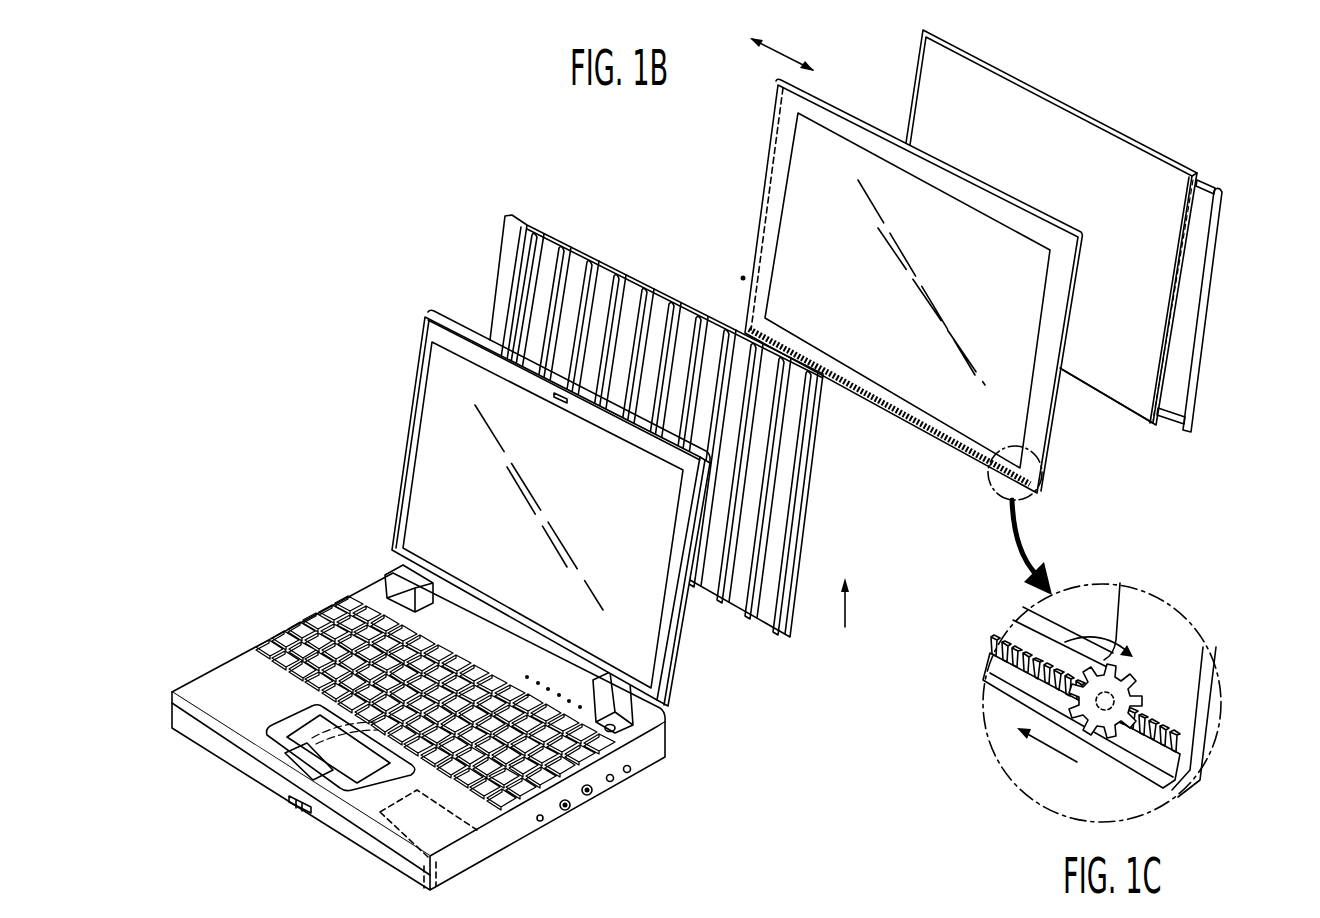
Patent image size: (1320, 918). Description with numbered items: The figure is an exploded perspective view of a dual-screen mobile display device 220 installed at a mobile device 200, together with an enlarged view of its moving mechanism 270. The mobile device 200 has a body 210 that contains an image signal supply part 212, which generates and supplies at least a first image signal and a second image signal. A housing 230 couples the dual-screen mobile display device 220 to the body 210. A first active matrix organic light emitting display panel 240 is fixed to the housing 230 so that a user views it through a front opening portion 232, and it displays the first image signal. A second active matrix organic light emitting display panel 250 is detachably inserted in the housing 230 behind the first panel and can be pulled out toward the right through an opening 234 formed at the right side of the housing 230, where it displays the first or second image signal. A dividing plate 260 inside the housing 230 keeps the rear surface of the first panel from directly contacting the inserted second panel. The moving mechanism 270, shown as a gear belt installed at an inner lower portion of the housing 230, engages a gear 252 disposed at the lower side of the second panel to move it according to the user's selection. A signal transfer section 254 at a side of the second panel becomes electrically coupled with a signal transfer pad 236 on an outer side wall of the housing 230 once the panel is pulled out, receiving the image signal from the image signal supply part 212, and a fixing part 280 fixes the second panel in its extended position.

In FIG. 1B, the mobile device 200 is at (264, 434).
In FIG. 1B, the body 210 is at (278, 616).
In FIG. 1B, the image signal supply part 212 is at (388, 827).
In FIG. 1B, the dual-screen mobile display device 220 is at (460, 130).
In FIG. 1B, the housing 230 is at (428, 316).
In FIG. 1B, the front opening portion 232 is at (418, 522).
In FIG. 1B, the opening 234 is at (845, 628).
In FIG. 1B, the signal transfer pad 236 is at (676, 690).
In FIG. 1B, the first active matrix organic light emitting display panel 240 is at (445, 377).
In FIG. 1B, the second active matrix organic light emitting display panel 250 is at (774, 163).
In FIG. 1C, the second active matrix organic light emitting display panel 250 is at (1180, 718).
In FIG. 1C, the gear 252 is at (1137, 693).
In FIG. 1B, the signal transfer section 254 is at (744, 276).
In FIG. 1B, the dividing plate 260 is at (527, 222).
In FIG. 1B, the moving mechanism 270 is at (952, 448).
In FIG. 1C, the moving mechanism 270 is at (1178, 784).
In FIG. 1B, the fixing part 280 is at (1222, 222).